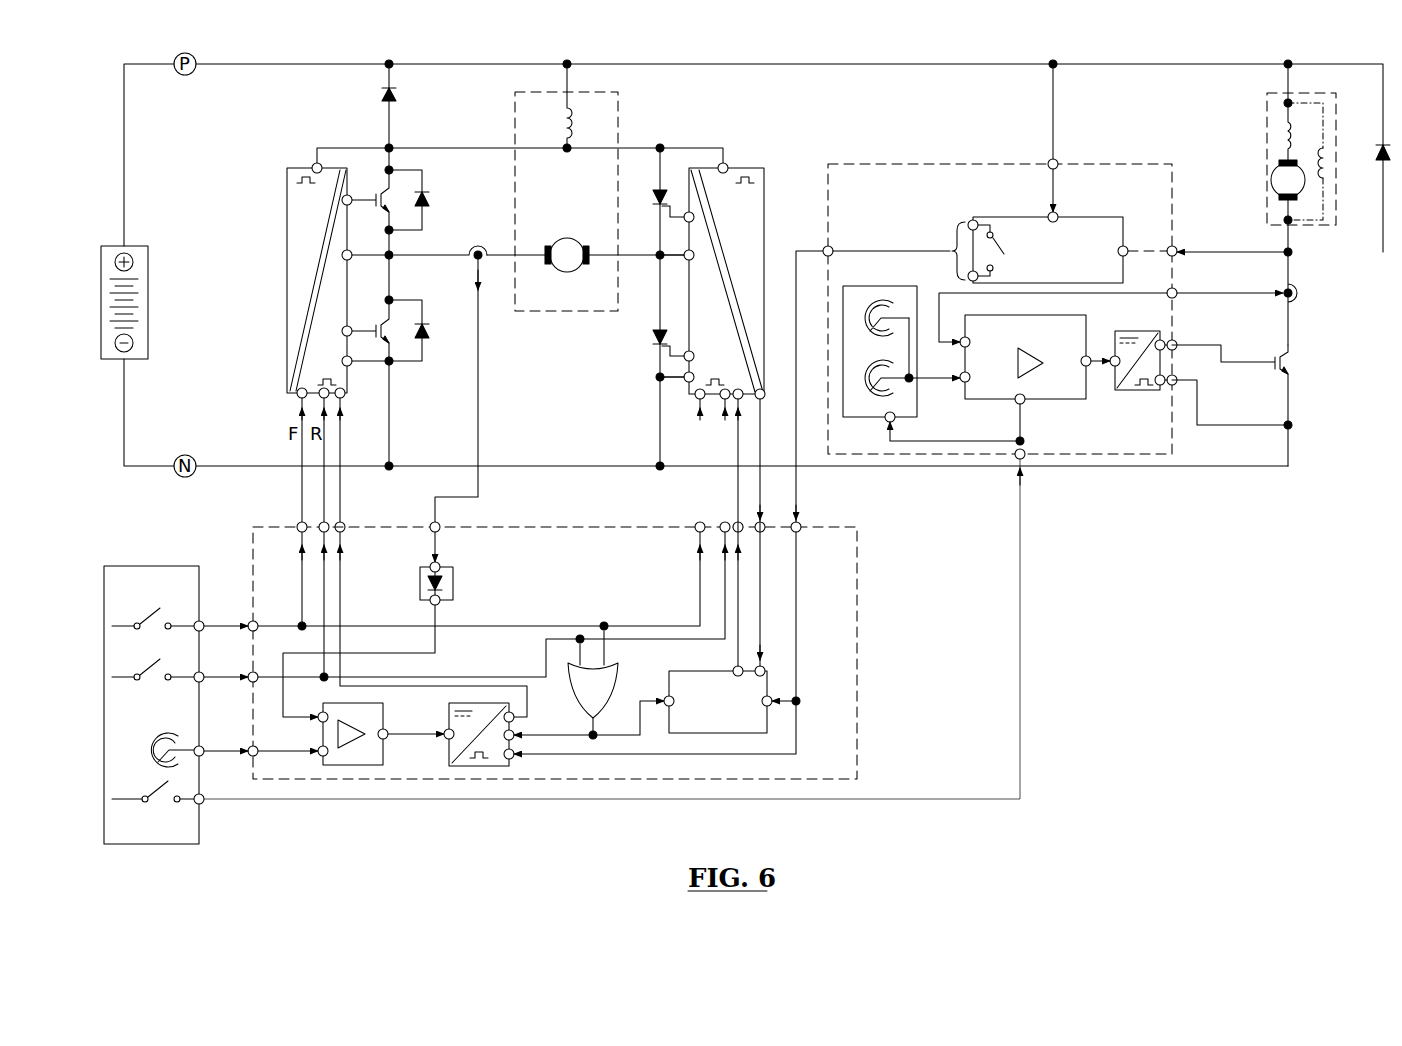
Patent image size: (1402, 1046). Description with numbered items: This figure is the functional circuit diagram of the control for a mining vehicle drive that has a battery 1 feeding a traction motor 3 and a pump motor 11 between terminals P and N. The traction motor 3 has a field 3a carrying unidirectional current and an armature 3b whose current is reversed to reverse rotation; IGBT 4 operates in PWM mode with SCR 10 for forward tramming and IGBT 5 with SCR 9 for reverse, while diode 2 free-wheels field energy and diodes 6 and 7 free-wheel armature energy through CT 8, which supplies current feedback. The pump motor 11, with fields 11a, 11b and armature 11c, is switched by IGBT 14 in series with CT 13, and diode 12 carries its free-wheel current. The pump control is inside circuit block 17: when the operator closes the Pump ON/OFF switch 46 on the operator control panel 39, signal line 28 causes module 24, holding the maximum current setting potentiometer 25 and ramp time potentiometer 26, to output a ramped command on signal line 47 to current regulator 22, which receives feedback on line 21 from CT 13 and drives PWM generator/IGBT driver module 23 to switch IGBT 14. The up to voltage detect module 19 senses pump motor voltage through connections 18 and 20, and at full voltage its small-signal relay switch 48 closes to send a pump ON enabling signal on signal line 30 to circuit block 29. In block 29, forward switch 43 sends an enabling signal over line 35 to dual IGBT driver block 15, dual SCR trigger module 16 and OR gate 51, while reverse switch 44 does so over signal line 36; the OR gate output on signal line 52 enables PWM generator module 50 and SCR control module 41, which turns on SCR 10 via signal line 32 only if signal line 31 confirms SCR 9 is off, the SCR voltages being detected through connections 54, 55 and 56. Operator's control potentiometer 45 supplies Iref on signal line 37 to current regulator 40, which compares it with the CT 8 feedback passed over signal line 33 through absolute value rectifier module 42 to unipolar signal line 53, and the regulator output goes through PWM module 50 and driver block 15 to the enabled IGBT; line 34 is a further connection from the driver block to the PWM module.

The 120V battery 1 is at (148, 250).
The diode 2 is at (379, 106).
The traction motor 3 is at (615, 103).
The field 3a is at (556, 106).
The armature 3b is at (573, 244).
The IGBT 4 is at (372, 201).
The IGBT 5 is at (372, 360).
The diode 6 is at (413, 192).
The diode 7 is at (413, 324).
The CT 8 is at (444, 372).
The SCR 9 is at (668, 309).
The SCR 10 is at (669, 333).
The pump motor 11 is at (1330, 104).
The field 11a is at (1277, 130).
The field 11b is at (1334, 162).
The armature 11c is at (1270, 180).
The diode 12 is at (1372, 140).
The CT 13 is at (1305, 298).
The IGBT 14 is at (1244, 405).
The dual IGBT driver block 15 is at (287, 197).
The dual SCR trigger module 16 is at (764, 197).
The circuit block 17 is at (960, 168).
The connection 18 is at (1041, 136).
The up to voltage detect module 19 is at (1010, 222).
The connection 20 is at (1234, 242).
The line 21 is at (1230, 281).
The current regulator 22 is at (1084, 320).
The PWM generator/IGBT driver module 23 is at (1138, 333).
The module 24 is at (912, 288).
The maximum pump motor current setting potentiometer 25 is at (877, 312).
The ramp time adjustment potentiometer 26 is at (879, 357).
The signal line 28 is at (622, 604).
The circuit block 29 is at (860, 675).
The signal line 30 is at (707, 502).
The signal line 31 is at (772, 532).
The signal line 32 is at (748, 532).
The signal line 33 is at (449, 544).
The control line 34 is at (431, 557).
The line 35 is at (447, 515).
The signal line 36 is at (459, 540).
The signal line 37 is at (256, 752).
The operator control panel 39 is at (114, 575).
The current regulator 40 is at (324, 760).
The SCR control module 41 is at (706, 671).
The absolute value rectifier module 42 is at (453, 570).
The switch 43 is at (153, 614).
The switch 44 is at (153, 665).
The operator's control potentiometer 45 is at (147, 727).
The Pump ON/OFF switch 46 is at (153, 813).
The signal line 47 is at (937, 378).
The small-signal relay switch 48 is at (991, 250).
The PWM generator module 50 is at (450, 760).
The OR gate 51 is at (581, 698).
The signal line 52 is at (589, 720).
The signal line 53 is at (359, 661).
The connection 54 is at (689, 144).
The connection 55 is at (673, 243).
The signal line 56 is at (673, 391).